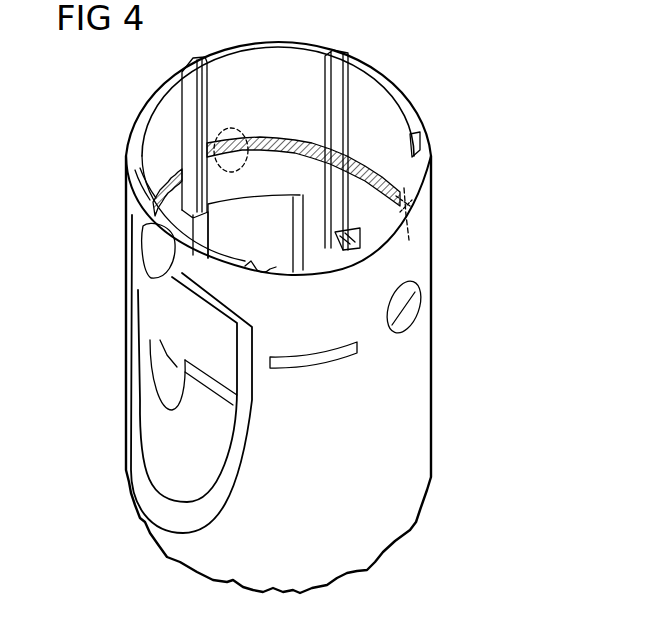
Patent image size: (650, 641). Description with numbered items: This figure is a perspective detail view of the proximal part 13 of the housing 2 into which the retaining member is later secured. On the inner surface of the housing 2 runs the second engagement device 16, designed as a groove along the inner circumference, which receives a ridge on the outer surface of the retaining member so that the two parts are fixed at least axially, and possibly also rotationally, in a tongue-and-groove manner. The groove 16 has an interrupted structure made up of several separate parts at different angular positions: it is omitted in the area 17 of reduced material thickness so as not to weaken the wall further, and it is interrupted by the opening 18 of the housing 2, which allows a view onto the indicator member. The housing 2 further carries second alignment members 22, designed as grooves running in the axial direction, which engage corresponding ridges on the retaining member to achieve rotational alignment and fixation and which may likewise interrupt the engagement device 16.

The housing 2 is at (112, 138).
The proximal part of the housing 13 is at (402, 80).
The second engagement device 16 is at (165, 180).
The area with reduced material thickness 17 is at (246, 128).
The opening of the housing 18 is at (163, 307).
The second alignment member 22 is at (422, 143).